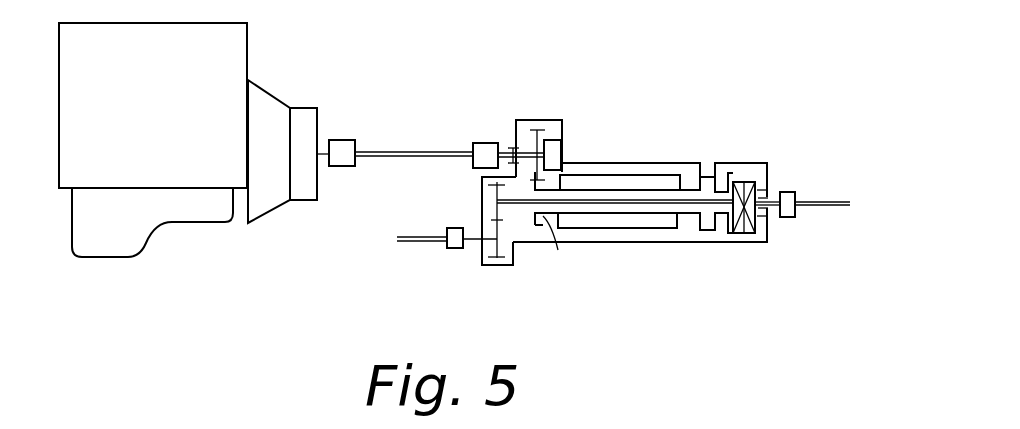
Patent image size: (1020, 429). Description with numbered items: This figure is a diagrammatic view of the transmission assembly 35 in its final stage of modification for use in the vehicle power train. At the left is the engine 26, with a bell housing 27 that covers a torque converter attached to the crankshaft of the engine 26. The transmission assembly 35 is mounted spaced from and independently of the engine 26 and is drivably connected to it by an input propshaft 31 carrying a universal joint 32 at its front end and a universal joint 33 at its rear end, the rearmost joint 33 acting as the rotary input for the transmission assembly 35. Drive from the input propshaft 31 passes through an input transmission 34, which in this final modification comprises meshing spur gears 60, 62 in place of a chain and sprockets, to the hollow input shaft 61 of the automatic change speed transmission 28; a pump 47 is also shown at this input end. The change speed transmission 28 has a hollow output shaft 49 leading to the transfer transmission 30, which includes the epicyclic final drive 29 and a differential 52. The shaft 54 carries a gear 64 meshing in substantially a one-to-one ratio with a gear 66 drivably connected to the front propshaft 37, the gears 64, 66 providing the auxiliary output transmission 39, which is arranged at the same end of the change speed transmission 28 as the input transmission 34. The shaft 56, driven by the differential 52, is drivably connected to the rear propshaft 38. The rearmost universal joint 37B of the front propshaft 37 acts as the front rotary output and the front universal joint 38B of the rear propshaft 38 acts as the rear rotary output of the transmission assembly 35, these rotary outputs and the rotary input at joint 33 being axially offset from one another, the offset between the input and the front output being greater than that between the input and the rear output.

The engine 26 is at (170, 118).
The bell housing 27 is at (262, 98).
The automatic change speed transmission 28 is at (641, 155).
The epicyclic final drive 29 is at (712, 169).
The transfer transmission 30 is at (711, 246).
The input propshaft 31 is at (412, 151).
The universal joint 32 is at (340, 140).
The universal joint 33 is at (480, 143).
The input transmission 34 is at (548, 120).
The transmission assembly 35 is at (627, 90).
The front propshaft 37 is at (415, 232).
The universal joint 37B is at (447, 245).
The rear propshaft 38 is at (815, 208).
The universal joint 38B is at (787, 219).
The output transmission 39 is at (495, 268).
The pump 47 is at (553, 148).
The hollow output shaft 49 is at (680, 232).
The differential 52 is at (754, 167).
The shaft 54 is at (628, 204).
The shaft 56 is at (752, 236).
The spur gear 60 is at (513, 150).
The hollow input shaft 61 is at (553, 218).
The spur gear 62 is at (546, 218).
The gear 64 is at (488, 193).
The gear 66 is at (483, 249).